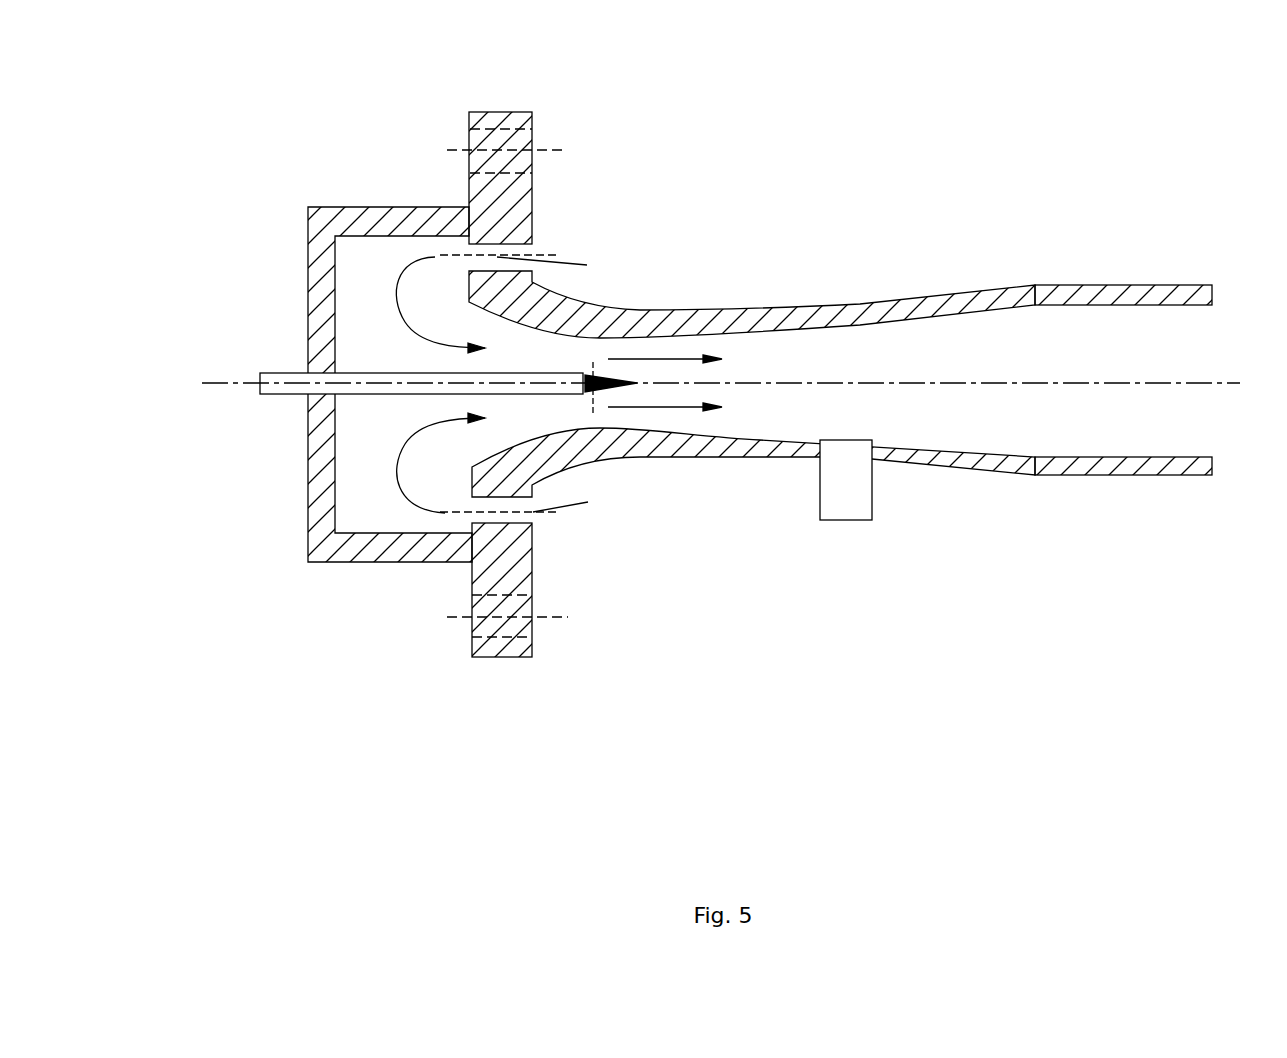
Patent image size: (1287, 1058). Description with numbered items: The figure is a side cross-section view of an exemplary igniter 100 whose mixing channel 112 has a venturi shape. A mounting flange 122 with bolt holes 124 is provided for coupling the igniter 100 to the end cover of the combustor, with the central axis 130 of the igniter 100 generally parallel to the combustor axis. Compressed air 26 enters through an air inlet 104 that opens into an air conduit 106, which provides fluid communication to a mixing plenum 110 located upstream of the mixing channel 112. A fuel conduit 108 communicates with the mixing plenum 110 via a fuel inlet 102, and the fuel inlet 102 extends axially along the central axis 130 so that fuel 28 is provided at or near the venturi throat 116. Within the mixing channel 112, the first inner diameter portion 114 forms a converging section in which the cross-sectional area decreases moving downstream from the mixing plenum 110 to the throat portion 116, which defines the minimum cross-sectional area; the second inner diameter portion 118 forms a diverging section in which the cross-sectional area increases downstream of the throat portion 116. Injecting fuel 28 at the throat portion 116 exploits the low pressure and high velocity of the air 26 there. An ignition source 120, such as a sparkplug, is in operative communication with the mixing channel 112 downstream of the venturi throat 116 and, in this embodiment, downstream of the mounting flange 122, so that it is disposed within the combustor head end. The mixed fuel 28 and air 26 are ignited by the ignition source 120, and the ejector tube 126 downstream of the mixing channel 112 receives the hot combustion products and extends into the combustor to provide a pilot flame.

The igniter 100 is at (836, 161).
The fuel inlet 102 is at (583, 373).
The air inlet 104 is at (533, 523).
The air conduit 106 is at (492, 517).
The fuel conduit 108 is at (285, 383).
The mixing plenum 110 is at (343, 432).
The mixing channel 112 is at (876, 284).
The first inner diameter portion 114 is at (549, 357).
The throat portion 116 is at (595, 413).
The second inner diameter portion 118 is at (944, 354).
The ignition source 120 is at (850, 507).
The mounting flange 122 is at (476, 118).
The bolt holes 124 is at (518, 143).
The ejector tube 126 is at (1118, 295).
The central axis 130 is at (245, 385).
The compressed air 26 is at (405, 275).
The fuel 28 is at (590, 394).